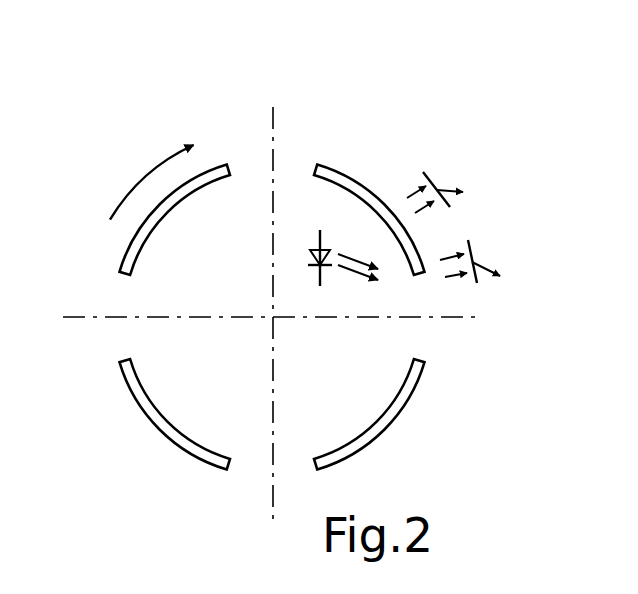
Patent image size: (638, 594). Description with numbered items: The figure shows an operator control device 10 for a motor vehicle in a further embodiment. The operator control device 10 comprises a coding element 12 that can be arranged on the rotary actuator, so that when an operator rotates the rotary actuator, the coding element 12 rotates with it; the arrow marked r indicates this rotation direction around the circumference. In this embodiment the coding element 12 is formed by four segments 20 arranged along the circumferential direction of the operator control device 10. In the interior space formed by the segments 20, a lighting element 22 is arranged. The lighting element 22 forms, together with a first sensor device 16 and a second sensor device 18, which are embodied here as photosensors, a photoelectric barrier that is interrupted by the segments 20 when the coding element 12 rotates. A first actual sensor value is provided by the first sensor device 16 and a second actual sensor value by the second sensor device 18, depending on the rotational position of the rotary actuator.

The operator control device 10 is at (226, 128).
The coding element 12 is at (118, 243).
The first sensor device 16 is at (439, 181).
The second sensor device 18 is at (483, 247).
The segment 20 is at (391, 414).
The lighting element 22 is at (317, 243).
The radius of rotation r is at (122, 186).